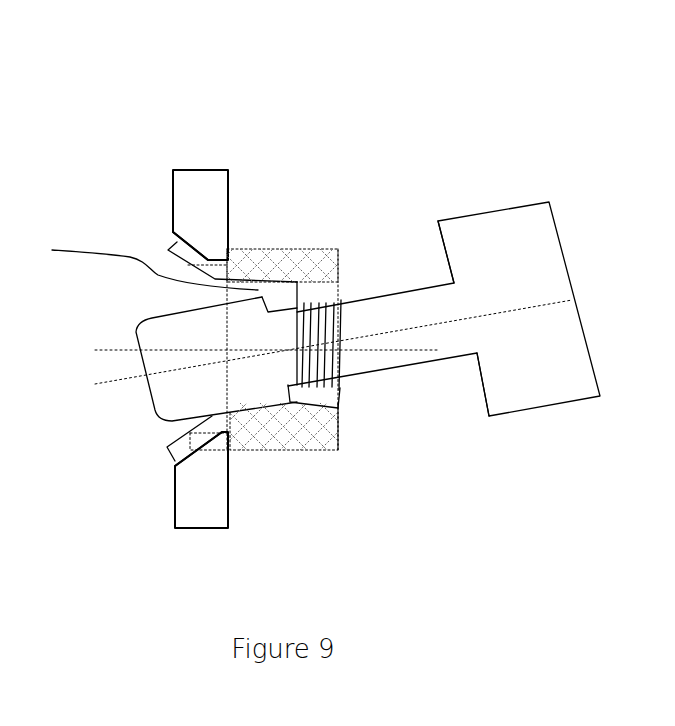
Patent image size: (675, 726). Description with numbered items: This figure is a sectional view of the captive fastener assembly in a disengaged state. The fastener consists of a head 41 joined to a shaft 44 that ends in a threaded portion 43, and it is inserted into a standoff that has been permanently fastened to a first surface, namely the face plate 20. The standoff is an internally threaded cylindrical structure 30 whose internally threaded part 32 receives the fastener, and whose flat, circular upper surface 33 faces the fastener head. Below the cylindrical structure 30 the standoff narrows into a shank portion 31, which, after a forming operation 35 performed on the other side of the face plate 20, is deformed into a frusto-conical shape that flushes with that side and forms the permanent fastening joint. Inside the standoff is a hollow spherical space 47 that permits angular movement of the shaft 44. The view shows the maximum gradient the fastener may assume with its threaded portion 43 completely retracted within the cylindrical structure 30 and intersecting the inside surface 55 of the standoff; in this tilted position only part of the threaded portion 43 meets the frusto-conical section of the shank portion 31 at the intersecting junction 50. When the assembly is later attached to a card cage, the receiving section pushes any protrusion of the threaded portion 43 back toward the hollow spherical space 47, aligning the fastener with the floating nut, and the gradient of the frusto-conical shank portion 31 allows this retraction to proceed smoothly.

The face plate 20 is at (205, 170).
The forming operation region 35 is at (171, 247).
The shank portion 31 is at (168, 250).
The hollow spherical space 47 is at (145, 265).
The threaded portion 43 is at (152, 318).
The cylindrical structure 30 is at (257, 450).
The internally threaded part 32 is at (301, 312).
The inside surface 55 is at (335, 405).
The shaft 44 is at (417, 367).
The head 41 is at (550, 404).
The upper surface 33 is at (338, 435).
The intersecting junction 50 is at (229, 440).